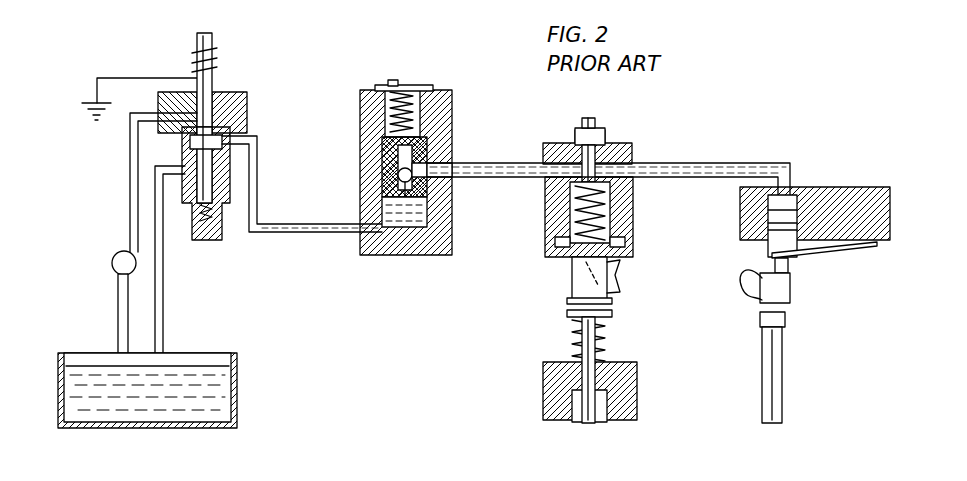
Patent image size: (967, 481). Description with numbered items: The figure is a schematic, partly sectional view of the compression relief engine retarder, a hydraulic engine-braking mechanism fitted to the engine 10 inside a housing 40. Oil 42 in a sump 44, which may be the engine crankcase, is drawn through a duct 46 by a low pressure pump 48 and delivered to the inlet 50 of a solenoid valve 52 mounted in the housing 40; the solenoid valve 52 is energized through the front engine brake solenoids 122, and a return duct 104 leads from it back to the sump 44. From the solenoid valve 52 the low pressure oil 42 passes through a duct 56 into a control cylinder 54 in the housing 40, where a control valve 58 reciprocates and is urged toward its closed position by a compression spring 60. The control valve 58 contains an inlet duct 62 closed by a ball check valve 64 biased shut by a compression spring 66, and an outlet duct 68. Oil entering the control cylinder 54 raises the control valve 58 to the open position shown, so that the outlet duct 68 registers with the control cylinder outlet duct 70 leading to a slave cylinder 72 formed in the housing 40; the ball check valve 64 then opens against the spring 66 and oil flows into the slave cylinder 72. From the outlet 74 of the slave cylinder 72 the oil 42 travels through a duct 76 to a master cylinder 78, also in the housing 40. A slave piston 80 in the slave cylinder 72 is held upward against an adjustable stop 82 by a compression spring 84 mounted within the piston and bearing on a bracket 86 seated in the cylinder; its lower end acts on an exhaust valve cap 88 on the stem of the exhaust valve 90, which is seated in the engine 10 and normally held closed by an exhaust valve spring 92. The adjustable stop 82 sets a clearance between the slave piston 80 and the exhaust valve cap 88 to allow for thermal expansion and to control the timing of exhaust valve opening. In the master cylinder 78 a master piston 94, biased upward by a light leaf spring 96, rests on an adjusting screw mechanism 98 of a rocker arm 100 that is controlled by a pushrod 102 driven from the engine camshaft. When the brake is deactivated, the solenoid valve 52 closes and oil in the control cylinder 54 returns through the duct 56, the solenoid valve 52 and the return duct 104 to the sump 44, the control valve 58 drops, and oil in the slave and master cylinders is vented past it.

The engine 10 is at (630, 385).
The housing 40 is at (243, 104).
The oil 42 is at (218, 402).
The sump 44 is at (238, 381).
The duct 46 is at (118, 325).
The low pressure pump 48 is at (112, 262).
The inlet 50 is at (182, 135).
The solenoid valve 52 is at (228, 178).
The control cylinder 54 is at (388, 207).
The duct 56 is at (297, 229).
The control valve 58 is at (388, 186).
The compression spring 60 is at (392, 116).
The inlet duct 62 is at (428, 195).
The ball check valve 64 is at (413, 178).
The compression spring 66 is at (415, 147).
The outlet duct 68 is at (427, 167).
The control cylinder outlet duct 70 is at (526, 160).
The slave cylinder 72 is at (549, 178).
The outlet 74 is at (640, 160).
The duct 76 is at (734, 163).
The master cylinder 78 is at (793, 192).
The slave piston 80 is at (577, 273).
The adjustable stop 82 is at (598, 128).
The compression spring 84 is at (612, 217).
The bracket 86 is at (633, 238).
The exhaust valve cap 88 is at (613, 300).
The exhaust valve 90 is at (603, 424).
The exhaust valve spring 92 is at (604, 326).
The master piston 94 is at (768, 247).
The light leaf spring 96 is at (815, 252).
The adjusting screw mechanism 98 is at (792, 273).
The rocker arm 100 is at (744, 303).
The pushrod 102 is at (782, 353).
The return duct 104 is at (167, 312).
The front engine brake solenoids 122 is at (229, 55).